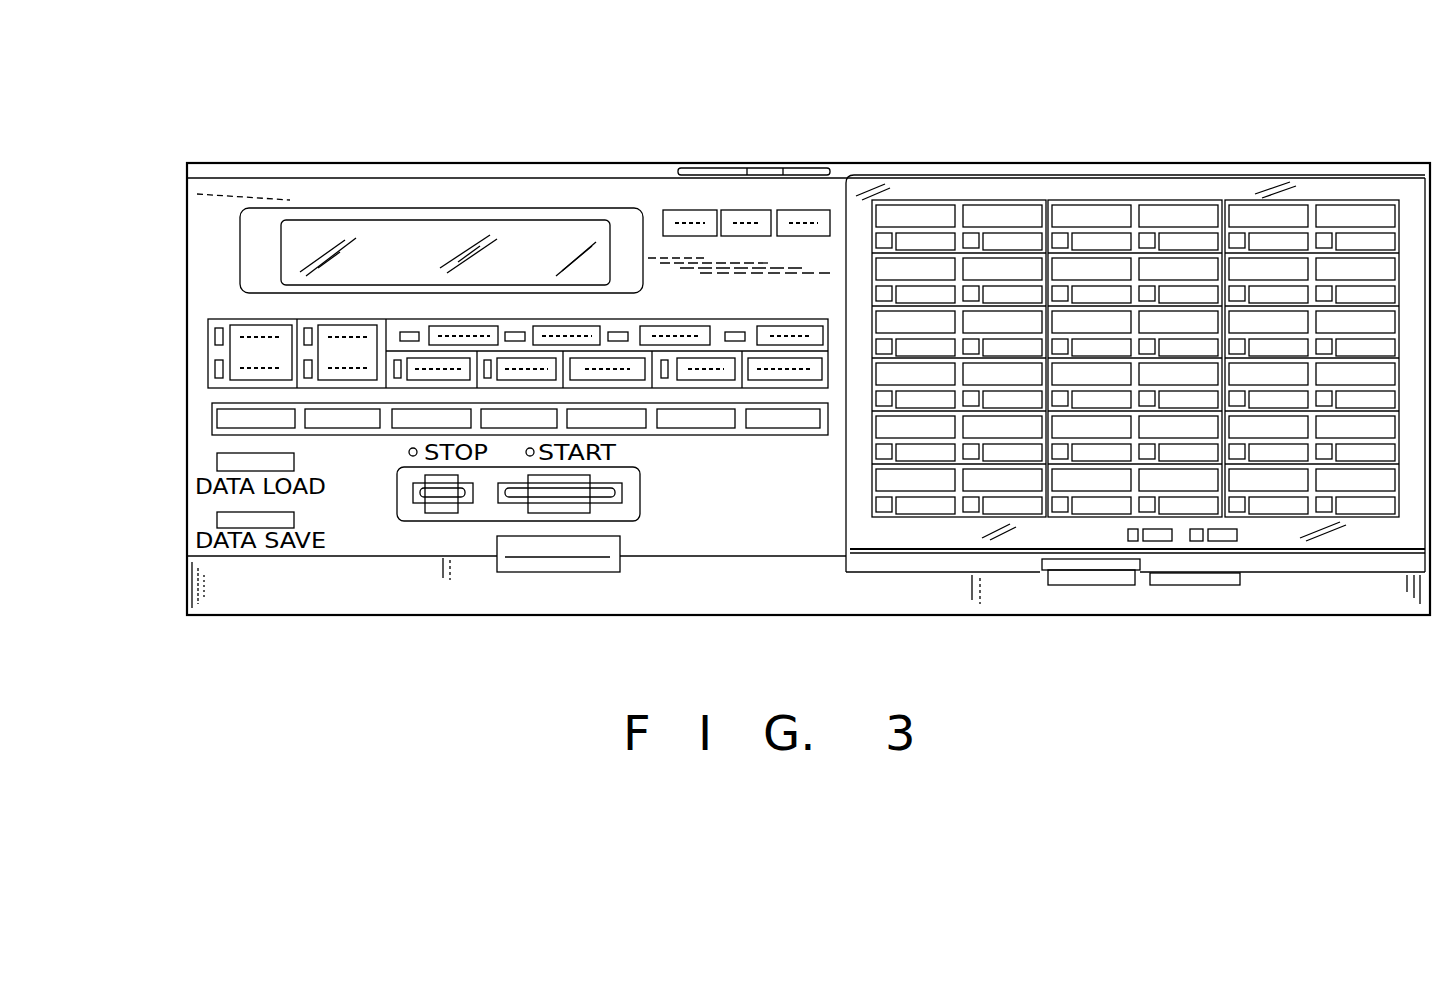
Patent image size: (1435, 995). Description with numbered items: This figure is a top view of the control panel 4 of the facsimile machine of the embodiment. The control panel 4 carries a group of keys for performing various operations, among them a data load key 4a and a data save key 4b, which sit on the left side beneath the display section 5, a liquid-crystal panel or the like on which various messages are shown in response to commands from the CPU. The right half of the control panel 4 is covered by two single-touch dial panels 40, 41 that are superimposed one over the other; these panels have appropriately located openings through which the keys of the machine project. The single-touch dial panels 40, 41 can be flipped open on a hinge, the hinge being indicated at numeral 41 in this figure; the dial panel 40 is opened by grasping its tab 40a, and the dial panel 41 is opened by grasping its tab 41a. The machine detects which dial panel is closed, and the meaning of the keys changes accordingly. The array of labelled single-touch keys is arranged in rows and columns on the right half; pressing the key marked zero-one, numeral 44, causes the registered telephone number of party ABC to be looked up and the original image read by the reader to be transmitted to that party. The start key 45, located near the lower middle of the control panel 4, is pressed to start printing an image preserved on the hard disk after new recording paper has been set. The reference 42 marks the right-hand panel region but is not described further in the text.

The control panel 4 is at (662, 163).
The data load key 4a is at (217, 462).
The data save key 4b is at (217, 520).
The display section 5 is at (422, 221).
The single-touch dial panel 40 is at (1327, 575).
The tab 40a is at (1217, 580).
The single-touch dial panel 41 is at (1120, 564).
The tab 41a is at (1063, 585).
The selection panel 42 is at (1135, 330).
The "01" key 44 is at (940, 238).
The start key 45 is at (612, 497).